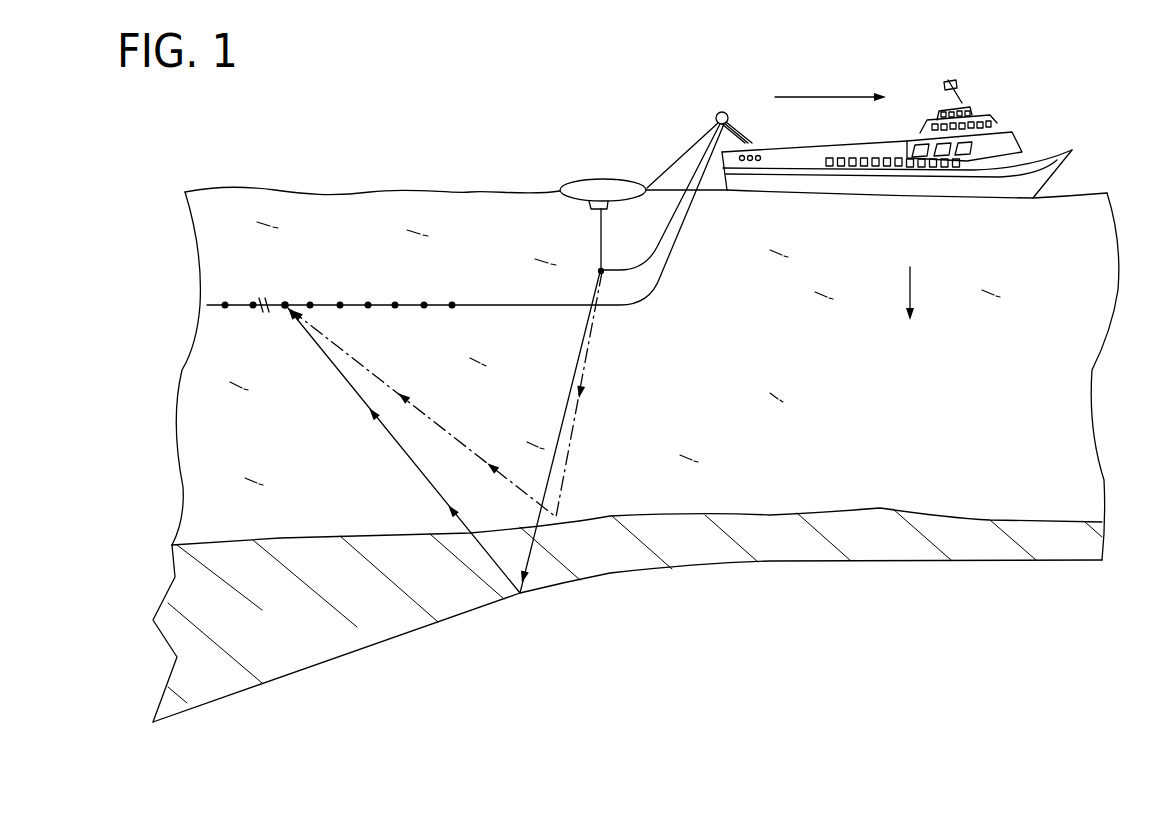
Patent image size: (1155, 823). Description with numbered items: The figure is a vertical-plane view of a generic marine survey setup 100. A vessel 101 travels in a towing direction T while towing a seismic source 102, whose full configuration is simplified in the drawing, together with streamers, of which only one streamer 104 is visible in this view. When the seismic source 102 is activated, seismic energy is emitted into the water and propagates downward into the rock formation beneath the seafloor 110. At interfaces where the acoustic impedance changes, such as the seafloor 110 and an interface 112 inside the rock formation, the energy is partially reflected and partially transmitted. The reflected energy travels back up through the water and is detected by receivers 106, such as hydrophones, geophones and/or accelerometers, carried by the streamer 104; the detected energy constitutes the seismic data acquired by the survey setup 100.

The marine survey setup 100 is at (494, 106).
The vessel 101 is at (1050, 148).
The seismic source 102 is at (600, 270).
The streamer 104 is at (240, 306).
The receivers 106 is at (285, 302).
The seafloor 110 is at (868, 507).
The interface 112 is at (920, 560).